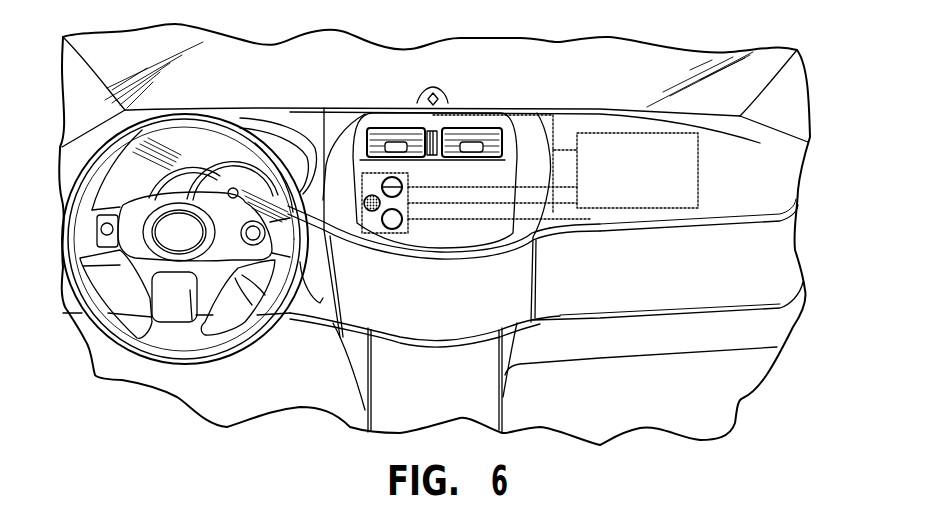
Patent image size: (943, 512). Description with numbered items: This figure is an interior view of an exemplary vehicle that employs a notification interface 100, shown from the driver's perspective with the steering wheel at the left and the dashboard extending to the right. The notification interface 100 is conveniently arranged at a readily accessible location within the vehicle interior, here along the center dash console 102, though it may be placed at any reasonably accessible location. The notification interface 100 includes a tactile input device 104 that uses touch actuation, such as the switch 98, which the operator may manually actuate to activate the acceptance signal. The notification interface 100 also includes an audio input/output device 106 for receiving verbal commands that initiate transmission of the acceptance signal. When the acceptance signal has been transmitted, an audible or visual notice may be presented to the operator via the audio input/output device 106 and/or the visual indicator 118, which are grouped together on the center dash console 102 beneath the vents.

The switch 98 is at (390, 187).
The notification interface 100 is at (382, 173).
The center dash console 102 is at (520, 160).
The tactile input device 104 is at (403, 190).
The audio input/output device 106 is at (371, 212).
The visual indicator 118 is at (392, 230).